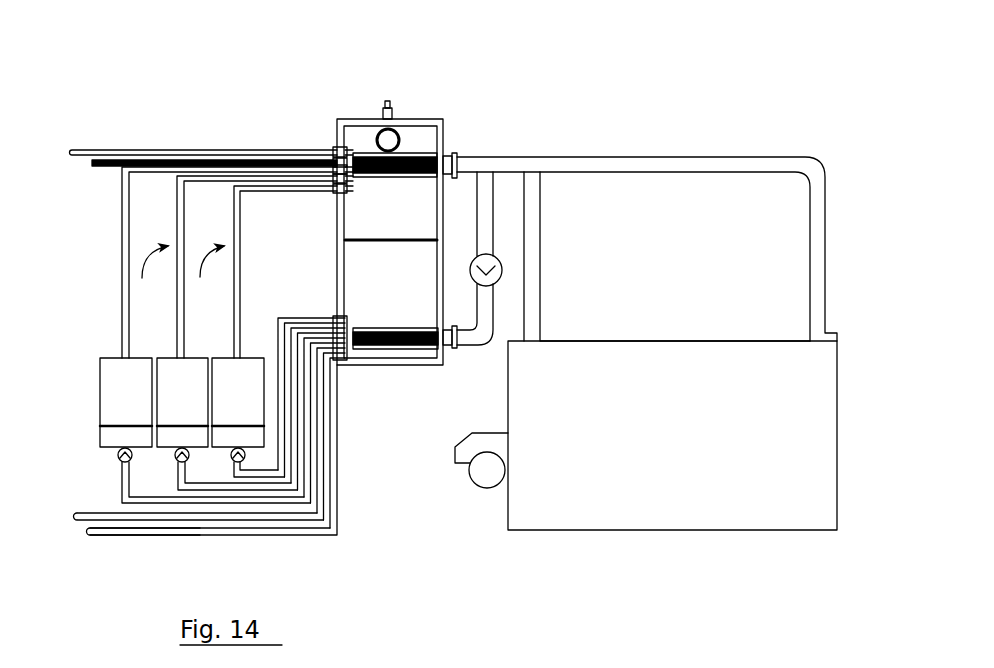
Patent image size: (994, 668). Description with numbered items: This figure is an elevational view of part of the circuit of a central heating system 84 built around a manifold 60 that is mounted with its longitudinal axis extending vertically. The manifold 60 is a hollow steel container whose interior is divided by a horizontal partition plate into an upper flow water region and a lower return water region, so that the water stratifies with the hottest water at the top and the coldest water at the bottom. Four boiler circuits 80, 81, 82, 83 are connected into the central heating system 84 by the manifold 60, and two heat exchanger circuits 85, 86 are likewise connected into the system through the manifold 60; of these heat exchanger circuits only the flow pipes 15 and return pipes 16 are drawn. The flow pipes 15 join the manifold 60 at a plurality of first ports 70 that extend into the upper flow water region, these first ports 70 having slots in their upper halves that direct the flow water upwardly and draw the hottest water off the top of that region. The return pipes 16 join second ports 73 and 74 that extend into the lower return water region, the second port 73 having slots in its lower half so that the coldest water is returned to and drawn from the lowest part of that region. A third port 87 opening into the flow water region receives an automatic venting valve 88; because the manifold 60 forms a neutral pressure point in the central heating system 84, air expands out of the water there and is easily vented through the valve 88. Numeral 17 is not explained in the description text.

The flow pipes 15 is at (188, 150).
The return pipes 16 is at (105, 513).
The pump / valve 17 is at (500, 262).
The manifold 60 is at (385, 350).
The first ports 70 is at (337, 152).
The second port 73 is at (422, 350).
The second port 74 is at (335, 325).
The boiler circuit 80 is at (821, 131).
The boiler circuit 81 is at (110, 300).
The boiler circuit 82 is at (155, 278).
The boiler circuit 83 is at (208, 278).
The central heating system 84 is at (696, 78).
The heat exchanger circuit 85 is at (103, 150).
The heat exchanger circuit 86 is at (106, 535).
The third port 87 is at (400, 133).
The automatic venting valve 88 is at (392, 108).